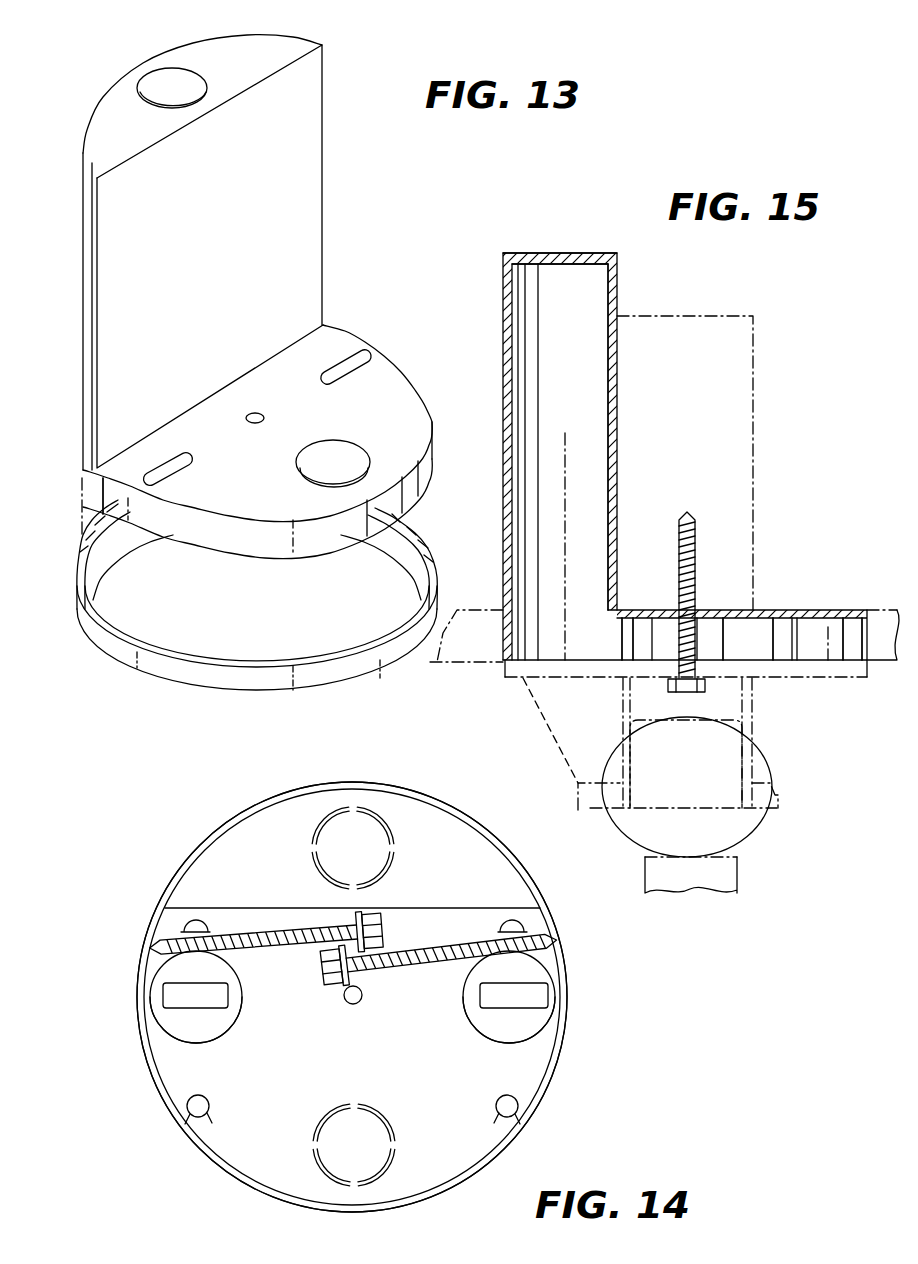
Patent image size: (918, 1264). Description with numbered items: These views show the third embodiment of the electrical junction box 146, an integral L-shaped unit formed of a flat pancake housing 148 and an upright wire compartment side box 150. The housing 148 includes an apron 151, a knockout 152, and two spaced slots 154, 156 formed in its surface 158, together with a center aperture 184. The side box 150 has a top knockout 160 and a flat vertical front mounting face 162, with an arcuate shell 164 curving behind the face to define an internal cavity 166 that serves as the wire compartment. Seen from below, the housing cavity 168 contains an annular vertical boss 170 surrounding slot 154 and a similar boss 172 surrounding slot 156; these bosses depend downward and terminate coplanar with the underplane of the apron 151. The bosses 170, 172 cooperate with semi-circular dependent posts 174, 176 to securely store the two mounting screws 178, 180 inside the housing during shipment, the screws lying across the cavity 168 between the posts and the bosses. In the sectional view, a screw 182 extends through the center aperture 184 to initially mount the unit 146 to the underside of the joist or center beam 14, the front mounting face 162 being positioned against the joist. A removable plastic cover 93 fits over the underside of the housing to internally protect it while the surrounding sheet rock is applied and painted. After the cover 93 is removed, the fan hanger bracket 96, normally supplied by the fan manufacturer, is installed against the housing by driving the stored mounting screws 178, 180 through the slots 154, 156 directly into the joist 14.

In FIG. 15, the joist or center beam 14 is at (717, 338).
In FIG. 13, the removable plastic cover 93 is at (240, 680).
In FIG. 15, the hanger bracket 96 is at (748, 712).
In FIG. 13, the electrical junction box 146 is at (444, 195).
In FIG. 13, the pancake housing 148 is at (410, 350).
In FIG. 13, the upright wire compartment side box 150 is at (71, 156).
In FIG. 15, the upright wire compartment side box 150 is at (634, 306).
In FIG. 13, the apron 151 is at (266, 540).
In FIG. 15, the apron 151 is at (878, 660).
In FIG. 14, the apron 151 is at (500, 1157).
In FIG. 13, the knockout 152 is at (338, 452).
In FIG. 15, the knockout 152 is at (830, 610).
In FIG. 14, the knockout 152 is at (360, 1172).
In FIG. 13, the slot 154 is at (148, 478).
In FIG. 14, the slot 154 is at (543, 995).
In FIG. 13, the slot 156 is at (366, 358).
In FIG. 14, the slot 156 is at (175, 993).
In FIG. 13, the surface 158 is at (249, 492).
In FIG. 15, the surface 158 is at (774, 604).
In FIG. 13, the top knockout 160 is at (172, 82).
In FIG. 15, the top knockout 160 is at (566, 254).
In FIG. 14, the top knockout 160 is at (365, 830).
In FIG. 13, the vertical front mounting face 162 is at (223, 272).
In FIG. 15, the vertical front mounting face 162 is at (617, 400).
In FIG. 13, the arcuate shell 164 is at (82, 252).
In FIG. 15, the arcuate shell 164 is at (503, 392).
In FIG. 15, the internal cavity 166 is at (594, 403).
In FIG. 15, the housing cavity 168 is at (748, 630).
In FIG. 14, the housing cavity 168 is at (381, 1055).
In FIG. 15, the annular vertical boss 170 is at (700, 635).
In FIG. 14, the annular vertical boss 170 is at (507, 1032).
In FIG. 14, the boss 172 is at (218, 1032).
In FIG. 15, the semi-circular dependent post 174 is at (628, 635).
In FIG. 14, the semi-circular dependent post 174 is at (525, 924).
In FIG. 14, the semi-circular dependent post 176 is at (197, 922).
In FIG. 14, the mounting screw 178 is at (482, 884).
In FIG. 14, the mounting screw 180 is at (265, 932).
In FIG. 15, the screw 182 is at (690, 595).
In FIG. 13, the center aperture 184 is at (255, 413).
In FIG. 14, the center aperture 184 is at (363, 996).